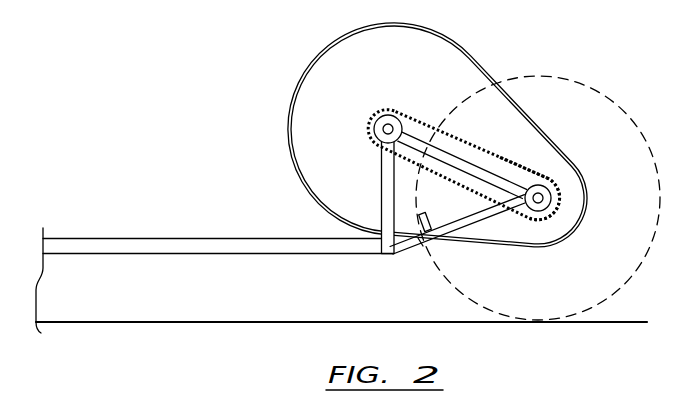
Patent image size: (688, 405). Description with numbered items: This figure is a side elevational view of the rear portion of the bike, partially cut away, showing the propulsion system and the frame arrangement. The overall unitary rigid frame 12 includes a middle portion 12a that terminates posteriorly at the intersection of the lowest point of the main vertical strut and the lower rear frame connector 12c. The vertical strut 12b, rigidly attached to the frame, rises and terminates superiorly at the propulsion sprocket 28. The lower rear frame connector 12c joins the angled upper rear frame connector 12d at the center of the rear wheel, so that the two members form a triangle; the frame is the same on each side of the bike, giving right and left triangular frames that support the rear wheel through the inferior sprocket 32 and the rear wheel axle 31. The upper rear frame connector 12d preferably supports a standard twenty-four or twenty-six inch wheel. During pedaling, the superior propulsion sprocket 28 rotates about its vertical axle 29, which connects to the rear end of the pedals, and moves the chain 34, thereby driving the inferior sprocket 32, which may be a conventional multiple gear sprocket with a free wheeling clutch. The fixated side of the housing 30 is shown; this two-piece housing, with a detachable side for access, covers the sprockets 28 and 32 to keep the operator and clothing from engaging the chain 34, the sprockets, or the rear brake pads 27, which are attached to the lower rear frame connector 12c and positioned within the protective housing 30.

The unitary rigid frame 12 is at (82, 264).
The middle portion 12a is at (242, 246).
The vertical strut 12b is at (390, 200).
The lower rear frame connector 12c is at (413, 256).
The upper rear frame connector 12d is at (453, 152).
The rear brake pads 27 is at (431, 218).
The propulsion sprocket 28 is at (410, 119).
The vertical axle 29 is at (386, 123).
The housing 30 is at (343, 38).
The rear wheel axle 31 is at (546, 199).
The inferior sprocket 32 is at (548, 177).
The chain 34 is at (518, 165).